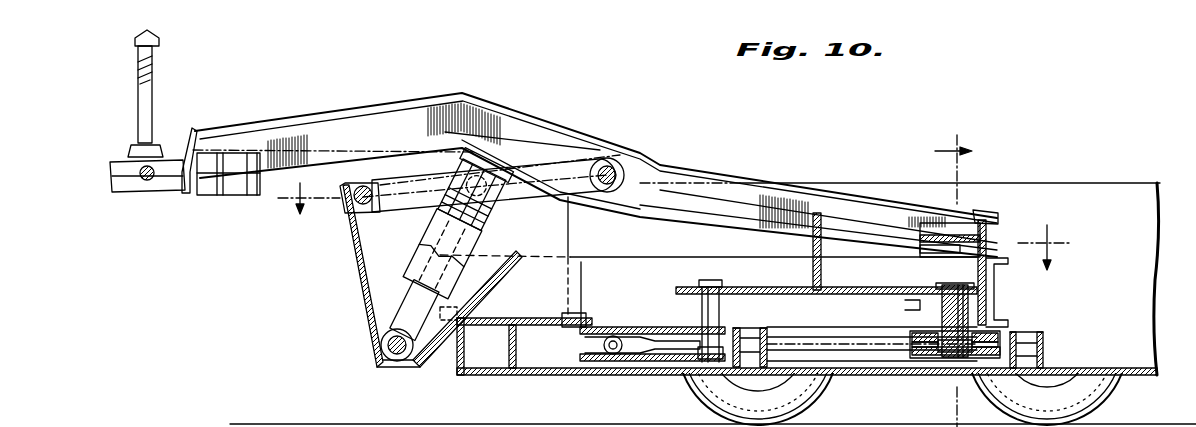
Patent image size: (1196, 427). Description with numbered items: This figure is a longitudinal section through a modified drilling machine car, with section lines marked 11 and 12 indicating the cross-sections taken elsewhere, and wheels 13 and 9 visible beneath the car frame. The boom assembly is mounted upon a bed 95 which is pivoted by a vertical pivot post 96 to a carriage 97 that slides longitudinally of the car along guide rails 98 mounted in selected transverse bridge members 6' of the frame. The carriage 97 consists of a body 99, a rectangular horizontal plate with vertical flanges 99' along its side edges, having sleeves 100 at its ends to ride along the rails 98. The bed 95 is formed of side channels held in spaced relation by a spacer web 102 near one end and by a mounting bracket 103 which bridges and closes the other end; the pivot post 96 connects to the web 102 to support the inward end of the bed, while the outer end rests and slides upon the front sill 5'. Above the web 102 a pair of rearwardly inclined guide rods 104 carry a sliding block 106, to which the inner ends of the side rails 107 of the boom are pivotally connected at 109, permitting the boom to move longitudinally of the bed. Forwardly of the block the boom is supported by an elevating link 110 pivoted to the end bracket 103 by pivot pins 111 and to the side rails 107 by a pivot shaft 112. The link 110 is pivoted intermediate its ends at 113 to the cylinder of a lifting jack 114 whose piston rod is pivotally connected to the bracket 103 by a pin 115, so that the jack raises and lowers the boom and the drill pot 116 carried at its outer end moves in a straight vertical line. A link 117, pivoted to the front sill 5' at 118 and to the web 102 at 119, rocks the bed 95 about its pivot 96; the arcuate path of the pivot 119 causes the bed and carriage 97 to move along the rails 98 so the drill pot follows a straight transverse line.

The drill pot 116 is at (152, 196).
The side rails of the boom 107 is at (583, 135).
The guide rods 104 is at (853, 227).
The elevating link 110 is at (420, 200).
The pivot pins 111 is at (352, 196).
The pivot shaft 112 is at (620, 170).
The pivot of the elevating link to the jack cylinder 113 is at (487, 155).
The lifting jack 114 is at (420, 267).
The pin 115 is at (395, 360).
The mounting bracket 103 is at (383, 296).
The pivot of link to front sill 118 is at (553, 320).
The front sill 5' is at (713, 303).
The link 117 is at (660, 323).
The pivot of link to web 119 is at (699, 284).
The spacer web 102 is at (781, 290).
The transverse bridge members 6' is at (904, 333).
The guide rails 98 is at (812, 340).
The carriage 97 is at (937, 357).
The sleeves 100 is at (951, 368).
The body 99 is at (989, 369).
The vertical flanges 99' is at (961, 323).
The pivot post 96 is at (947, 300).
The bed 95 is at (998, 311).
The sliding block 106 is at (937, 230).
The pivotal connection of side rails to block 109 is at (990, 218).
The wheel 13 is at (700, 397).
The wheel 9 is at (1105, 402).
The section line 12- 12 is at (675, 232).
The section line 11- 11 is at (976, 170).